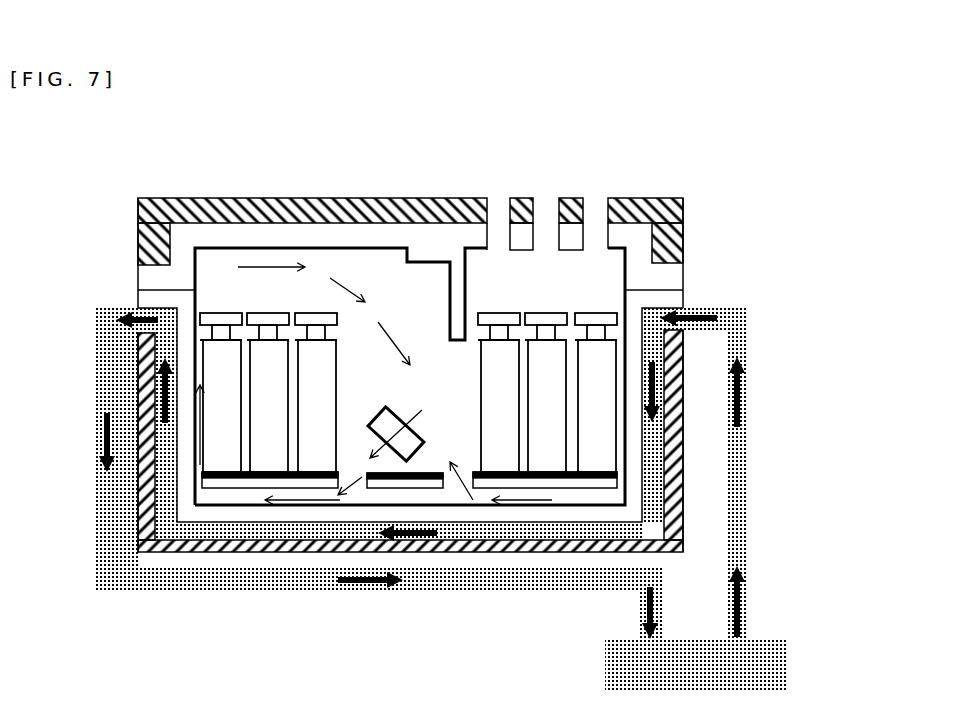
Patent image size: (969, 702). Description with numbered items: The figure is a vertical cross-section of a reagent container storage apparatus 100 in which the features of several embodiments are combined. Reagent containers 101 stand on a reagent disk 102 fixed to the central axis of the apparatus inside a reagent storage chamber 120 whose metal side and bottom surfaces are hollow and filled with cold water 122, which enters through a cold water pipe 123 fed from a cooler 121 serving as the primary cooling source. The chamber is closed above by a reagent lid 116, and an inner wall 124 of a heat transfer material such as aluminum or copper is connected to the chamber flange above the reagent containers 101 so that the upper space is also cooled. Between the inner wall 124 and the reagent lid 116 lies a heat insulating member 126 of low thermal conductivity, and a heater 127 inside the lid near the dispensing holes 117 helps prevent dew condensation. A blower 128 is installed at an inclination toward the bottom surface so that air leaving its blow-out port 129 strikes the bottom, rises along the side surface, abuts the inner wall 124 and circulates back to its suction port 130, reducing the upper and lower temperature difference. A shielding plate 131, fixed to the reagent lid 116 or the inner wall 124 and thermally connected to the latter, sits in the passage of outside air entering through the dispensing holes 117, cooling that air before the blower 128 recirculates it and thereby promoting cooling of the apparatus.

The reagent container storage apparatus 100 is at (200, 552).
The reagent container 101 is at (587, 458).
The reagent disk 102 is at (505, 493).
The reagent lid 116 is at (263, 202).
The dispensing hole 117 is at (595, 205).
The reagent storage chamber 120 is at (677, 300).
The cooler 121 is at (760, 670).
The cold water 122 is at (735, 495).
The cold water pipe 123 is at (123, 313).
The inner wall 124 is at (672, 276).
The heat insulating member 126 is at (137, 218).
The heater 127 is at (517, 203).
The blower 128 is at (393, 453).
The blow-out port 129 is at (352, 490).
The suction port 130 is at (457, 478).
The shielding plate 131 is at (425, 250).